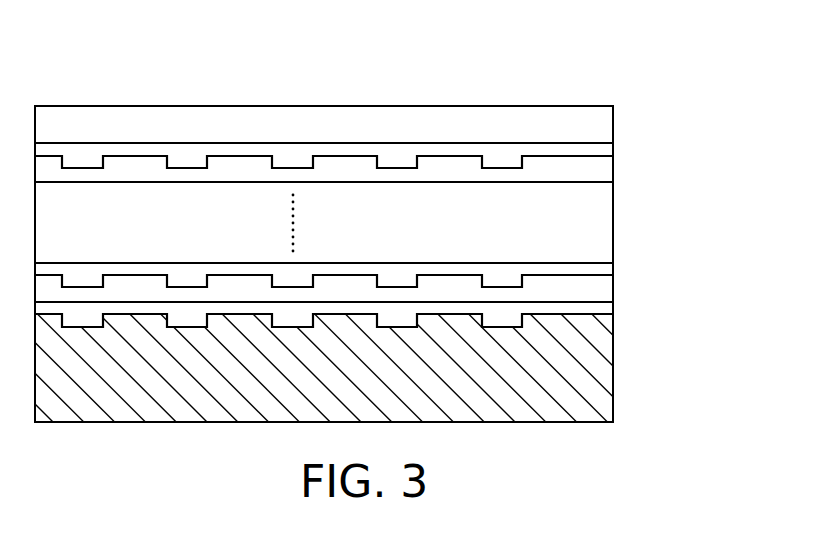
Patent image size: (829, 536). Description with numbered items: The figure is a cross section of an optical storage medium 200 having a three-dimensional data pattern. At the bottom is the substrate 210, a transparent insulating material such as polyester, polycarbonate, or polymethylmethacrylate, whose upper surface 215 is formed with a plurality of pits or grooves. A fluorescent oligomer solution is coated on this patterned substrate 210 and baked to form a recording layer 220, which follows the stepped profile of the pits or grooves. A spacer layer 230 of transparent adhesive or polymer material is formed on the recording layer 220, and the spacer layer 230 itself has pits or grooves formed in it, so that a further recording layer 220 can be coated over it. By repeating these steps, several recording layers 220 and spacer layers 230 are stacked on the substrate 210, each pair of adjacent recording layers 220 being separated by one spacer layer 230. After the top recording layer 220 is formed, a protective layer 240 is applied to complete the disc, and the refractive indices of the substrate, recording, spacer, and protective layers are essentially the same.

The light emitting device 200 is at (765, 44).
The substrate 210 is at (588, 395).
The patterned surface of substrate 215 is at (523, 320).
The recording layer 220 is at (588, 151).
The spacer layer 230 is at (602, 171).
The cover layer 240 is at (588, 126).